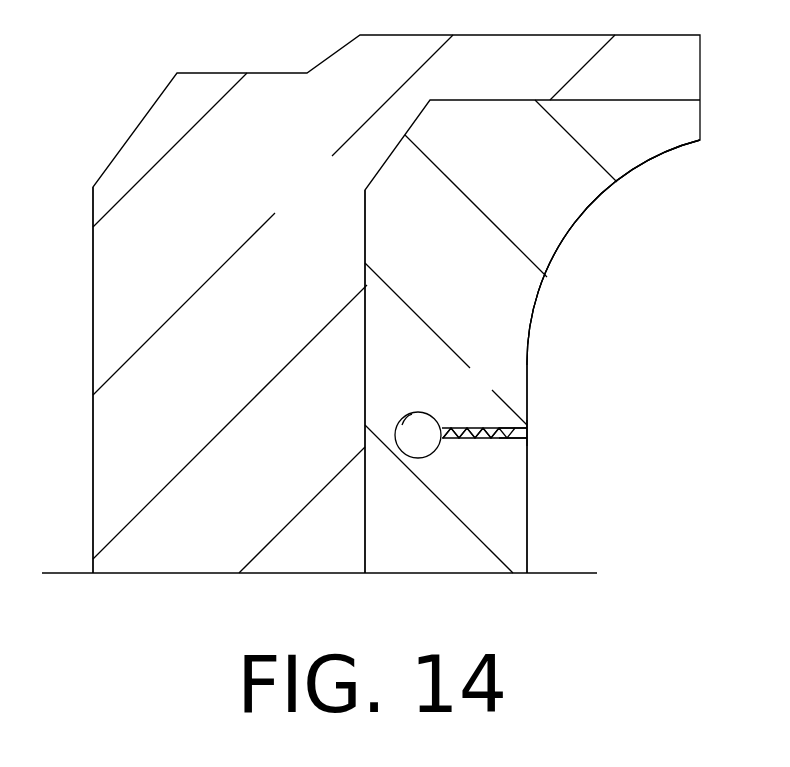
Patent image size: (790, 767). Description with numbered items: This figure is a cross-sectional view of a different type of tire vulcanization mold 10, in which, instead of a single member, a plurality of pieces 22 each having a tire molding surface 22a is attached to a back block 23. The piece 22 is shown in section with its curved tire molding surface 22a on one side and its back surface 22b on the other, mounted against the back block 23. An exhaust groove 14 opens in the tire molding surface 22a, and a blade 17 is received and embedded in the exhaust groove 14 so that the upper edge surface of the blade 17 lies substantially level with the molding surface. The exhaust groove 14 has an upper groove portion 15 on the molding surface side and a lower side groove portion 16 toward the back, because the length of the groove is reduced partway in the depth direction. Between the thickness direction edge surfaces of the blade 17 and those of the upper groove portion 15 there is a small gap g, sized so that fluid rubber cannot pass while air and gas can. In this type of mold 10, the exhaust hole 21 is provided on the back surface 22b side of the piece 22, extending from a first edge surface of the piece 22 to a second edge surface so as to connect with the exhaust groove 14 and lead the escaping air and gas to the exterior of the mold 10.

The tire vulcanization mold 10 is at (117, 137).
The exhaust groove 14 is at (533, 433).
The upper groove portion 15 is at (519, 428).
The lower side groove portion 16 is at (472, 428).
The blade 17 is at (493, 440).
The exhaust hole 21 is at (396, 428).
The piece 22 is at (655, 158).
The tire molding surface 22a is at (565, 242).
The back surface 22b is at (367, 247).
The back block 23 is at (93, 347).
The small gap g is at (532, 426).